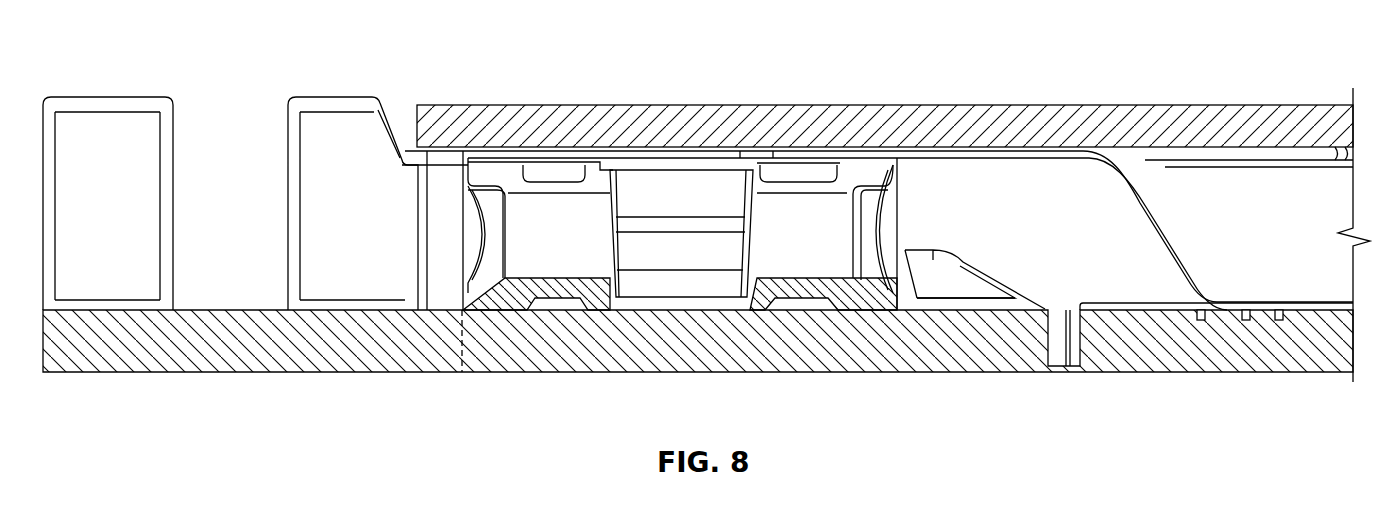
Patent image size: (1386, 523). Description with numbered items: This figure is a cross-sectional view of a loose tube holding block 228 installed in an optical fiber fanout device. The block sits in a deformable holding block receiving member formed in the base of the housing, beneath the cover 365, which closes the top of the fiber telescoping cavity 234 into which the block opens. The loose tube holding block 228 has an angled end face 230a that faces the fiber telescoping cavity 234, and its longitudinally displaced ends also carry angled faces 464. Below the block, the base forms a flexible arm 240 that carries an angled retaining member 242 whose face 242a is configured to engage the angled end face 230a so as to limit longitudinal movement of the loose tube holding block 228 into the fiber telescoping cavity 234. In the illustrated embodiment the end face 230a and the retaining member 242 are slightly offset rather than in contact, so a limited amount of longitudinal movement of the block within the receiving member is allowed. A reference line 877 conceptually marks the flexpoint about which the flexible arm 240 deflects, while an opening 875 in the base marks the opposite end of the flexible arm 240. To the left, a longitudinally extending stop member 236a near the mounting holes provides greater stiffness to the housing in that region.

The stop member 236a is at (336, 97).
The cover 365 is at (1000, 104).
The fiber telescoping cavity 234 is at (1262, 192).
The angled face 464 is at (883, 217).
The loose tube holding block 228 is at (541, 283).
The angled end face 230a is at (880, 262).
The angled retaining member 242 is at (987, 271).
The face 242a is at (912, 306).
The opening 875 is at (1071, 350).
The reference line 877 is at (443, 353).
The flexible arm 240 is at (652, 350).